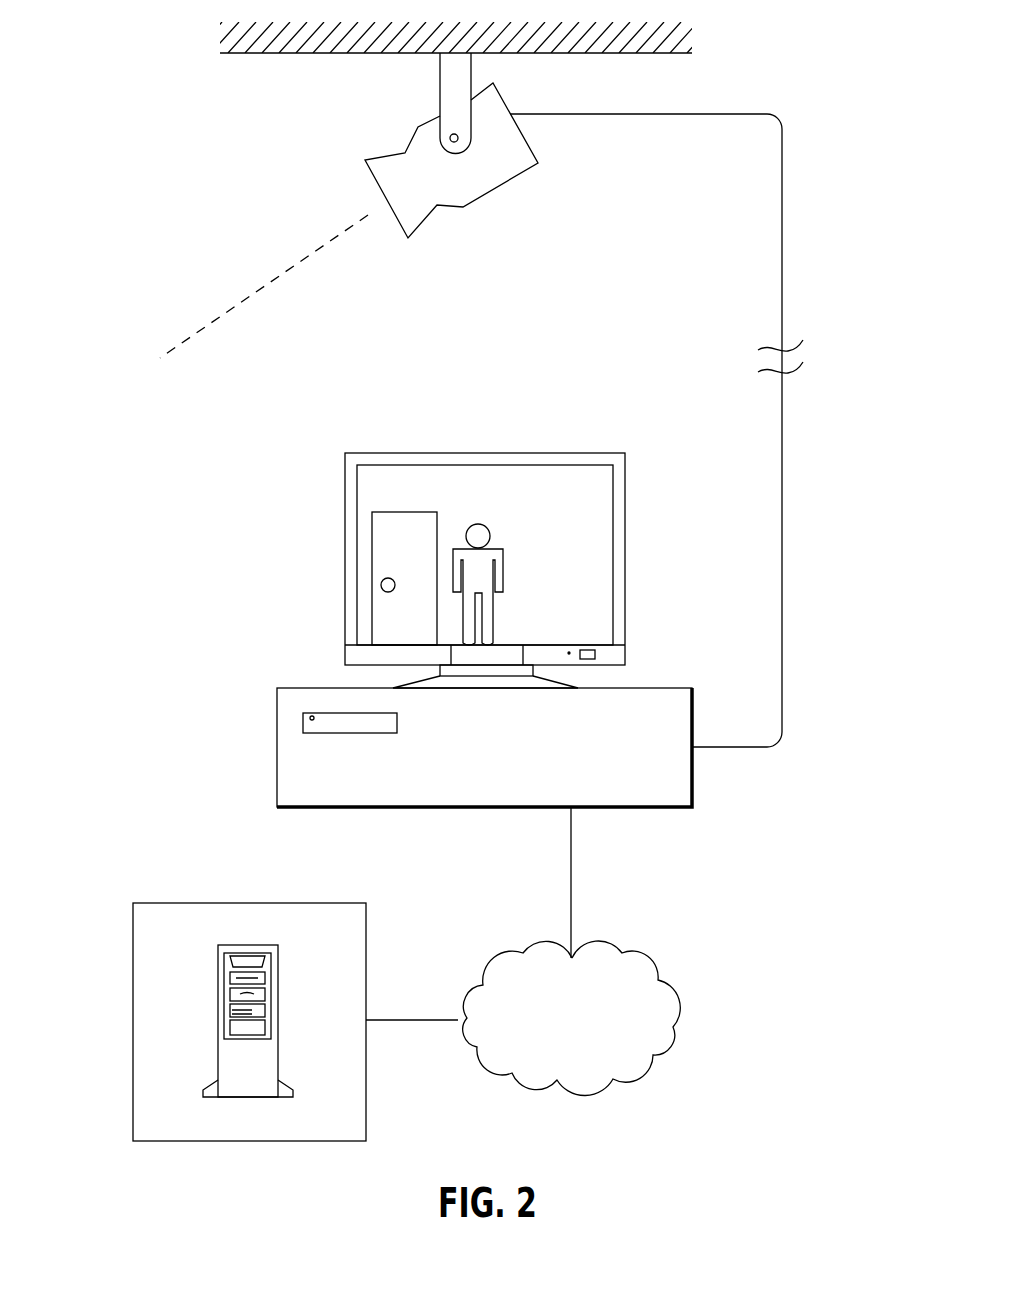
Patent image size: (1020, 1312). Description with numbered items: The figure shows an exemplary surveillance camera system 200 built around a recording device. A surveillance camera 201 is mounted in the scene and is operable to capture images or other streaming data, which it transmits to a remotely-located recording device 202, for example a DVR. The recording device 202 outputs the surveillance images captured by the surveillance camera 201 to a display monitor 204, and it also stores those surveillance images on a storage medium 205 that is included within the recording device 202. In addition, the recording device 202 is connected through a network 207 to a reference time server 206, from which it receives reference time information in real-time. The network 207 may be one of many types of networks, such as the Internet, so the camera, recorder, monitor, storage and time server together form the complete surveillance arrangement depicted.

The surveillance camera system 200 is at (810, 88).
The surveillance camera 201 is at (493, 173).
The recording device 202 is at (663, 782).
The display monitor 204 is at (585, 478).
The storage medium 205 is at (302, 720).
The reference time server 206 is at (190, 988).
The network 207 is at (597, 1041).